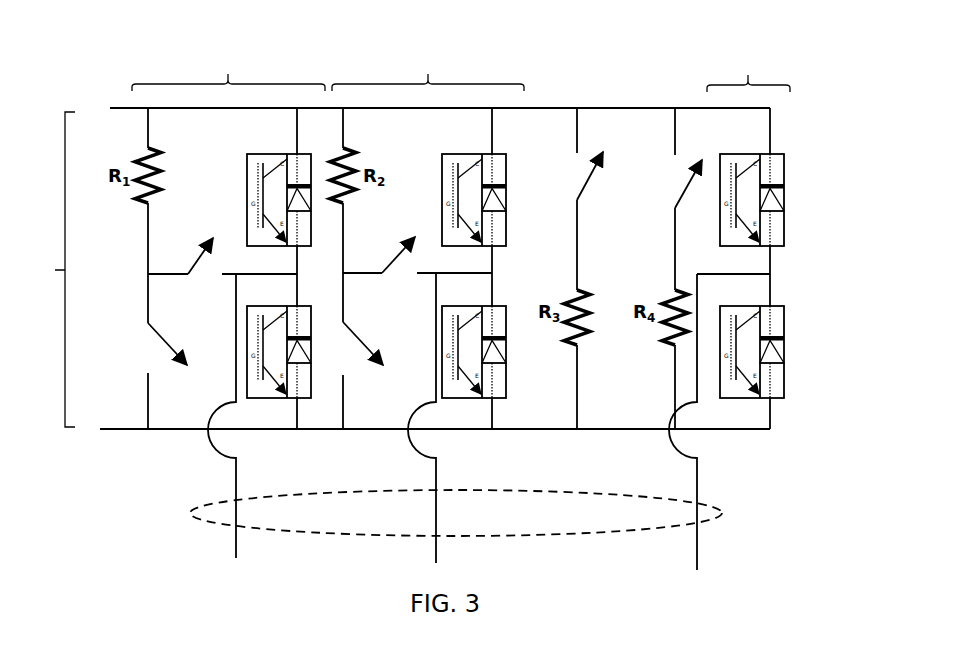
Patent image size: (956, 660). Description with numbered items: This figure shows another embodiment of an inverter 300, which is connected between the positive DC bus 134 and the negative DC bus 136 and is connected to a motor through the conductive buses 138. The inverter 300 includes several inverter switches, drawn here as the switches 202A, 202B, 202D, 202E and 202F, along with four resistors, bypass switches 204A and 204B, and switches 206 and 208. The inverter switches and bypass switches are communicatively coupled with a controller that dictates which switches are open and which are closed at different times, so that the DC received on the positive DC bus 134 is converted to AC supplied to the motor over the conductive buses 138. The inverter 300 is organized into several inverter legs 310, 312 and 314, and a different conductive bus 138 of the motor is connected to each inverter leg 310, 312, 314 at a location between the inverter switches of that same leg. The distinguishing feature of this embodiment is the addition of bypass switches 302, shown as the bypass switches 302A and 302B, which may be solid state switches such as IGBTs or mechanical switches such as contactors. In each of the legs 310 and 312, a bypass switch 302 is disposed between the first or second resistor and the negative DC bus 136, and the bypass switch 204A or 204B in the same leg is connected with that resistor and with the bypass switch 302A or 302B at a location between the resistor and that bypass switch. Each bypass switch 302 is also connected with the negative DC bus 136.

The positive DC bus 134 is at (113, 108).
The negative DC bus 136 is at (612, 430).
The conductive buses 138 is at (710, 507).
The inverter 300 is at (40, 269).
The bypass switches 302 is at (144, 351).
The bypass switch 302A is at (165, 350).
The bypass switch 302B is at (358, 348).
The bypass switch 204A is at (203, 258).
The bypass switch 204B is at (398, 262).
The switch 206 is at (588, 176).
The switch 208 is at (681, 192).
The inverter switch 202A is at (247, 182).
The inverter switch 202B is at (443, 186).
The inverter switch 202D is at (505, 382).
The inverter switch 202E is at (786, 192).
The inverter switch 202F is at (784, 350).
The inverter leg 310 is at (228, 66).
The inverter leg 312 is at (428, 66).
The inverter leg 314 is at (748, 64).